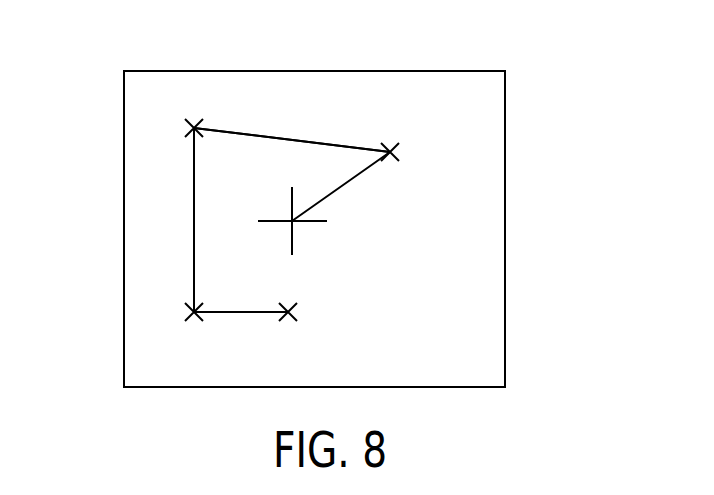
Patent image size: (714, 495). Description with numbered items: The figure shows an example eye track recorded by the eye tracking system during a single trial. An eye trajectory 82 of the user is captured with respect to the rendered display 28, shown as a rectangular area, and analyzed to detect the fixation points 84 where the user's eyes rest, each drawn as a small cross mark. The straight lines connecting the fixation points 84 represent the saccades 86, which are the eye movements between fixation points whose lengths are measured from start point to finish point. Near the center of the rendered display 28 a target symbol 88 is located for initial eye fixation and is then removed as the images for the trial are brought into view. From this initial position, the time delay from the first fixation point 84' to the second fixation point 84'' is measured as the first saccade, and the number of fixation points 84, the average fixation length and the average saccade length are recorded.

The rendered display 28 is at (505, 228).
The eye trajectory 82 is at (303, 103).
The fixation points 84 is at (133, 119).
The first fixation point 84' is at (325, 223).
The second fixation point 84'' is at (422, 136).
The saccades 86 is at (230, 132).
The target symbol 88 is at (293, 240).